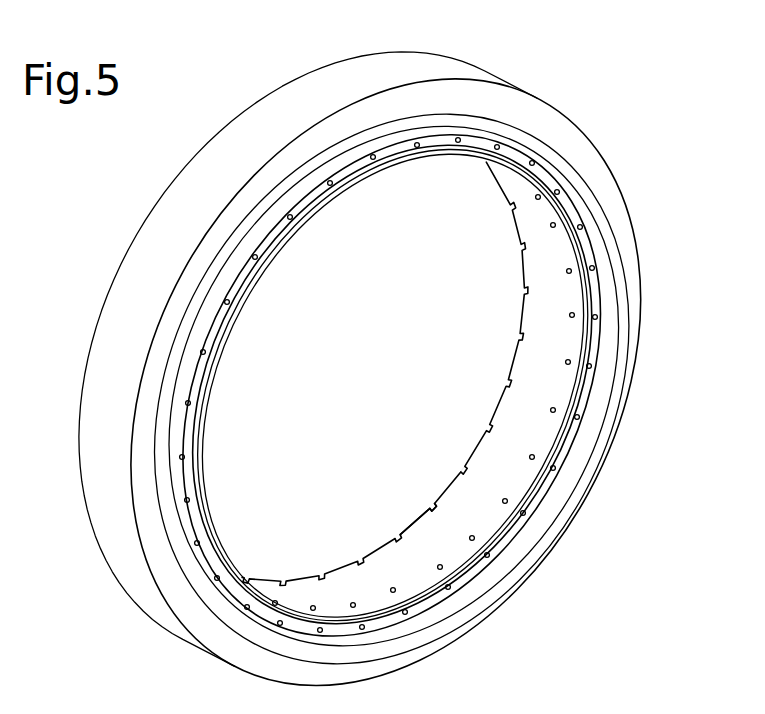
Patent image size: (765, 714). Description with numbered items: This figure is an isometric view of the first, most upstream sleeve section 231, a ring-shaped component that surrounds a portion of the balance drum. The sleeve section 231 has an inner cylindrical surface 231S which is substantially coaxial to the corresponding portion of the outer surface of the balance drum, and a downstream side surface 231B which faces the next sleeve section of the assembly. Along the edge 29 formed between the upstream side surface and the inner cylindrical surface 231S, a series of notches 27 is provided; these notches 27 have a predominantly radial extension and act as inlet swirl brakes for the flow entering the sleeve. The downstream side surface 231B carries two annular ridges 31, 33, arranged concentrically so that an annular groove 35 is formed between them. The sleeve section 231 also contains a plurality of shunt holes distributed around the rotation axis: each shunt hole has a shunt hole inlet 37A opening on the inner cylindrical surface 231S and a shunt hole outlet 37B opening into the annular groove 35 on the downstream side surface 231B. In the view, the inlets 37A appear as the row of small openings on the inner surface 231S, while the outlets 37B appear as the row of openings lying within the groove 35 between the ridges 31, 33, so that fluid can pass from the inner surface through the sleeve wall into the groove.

The first sleeve section 231 is at (666, 198).
The downstream side surface 231B is at (627, 262).
The inner cylindrical surface 231S is at (547, 240).
The notches 27 is at (425, 508).
The edge 29 is at (470, 450).
The annular ridge 31 is at (290, 247).
The annular ridge 33 is at (347, 158).
The annular groove 35 is at (433, 142).
The shunt hole inlet 37A is at (565, 357).
The shunt hole outlet 37B is at (603, 363).